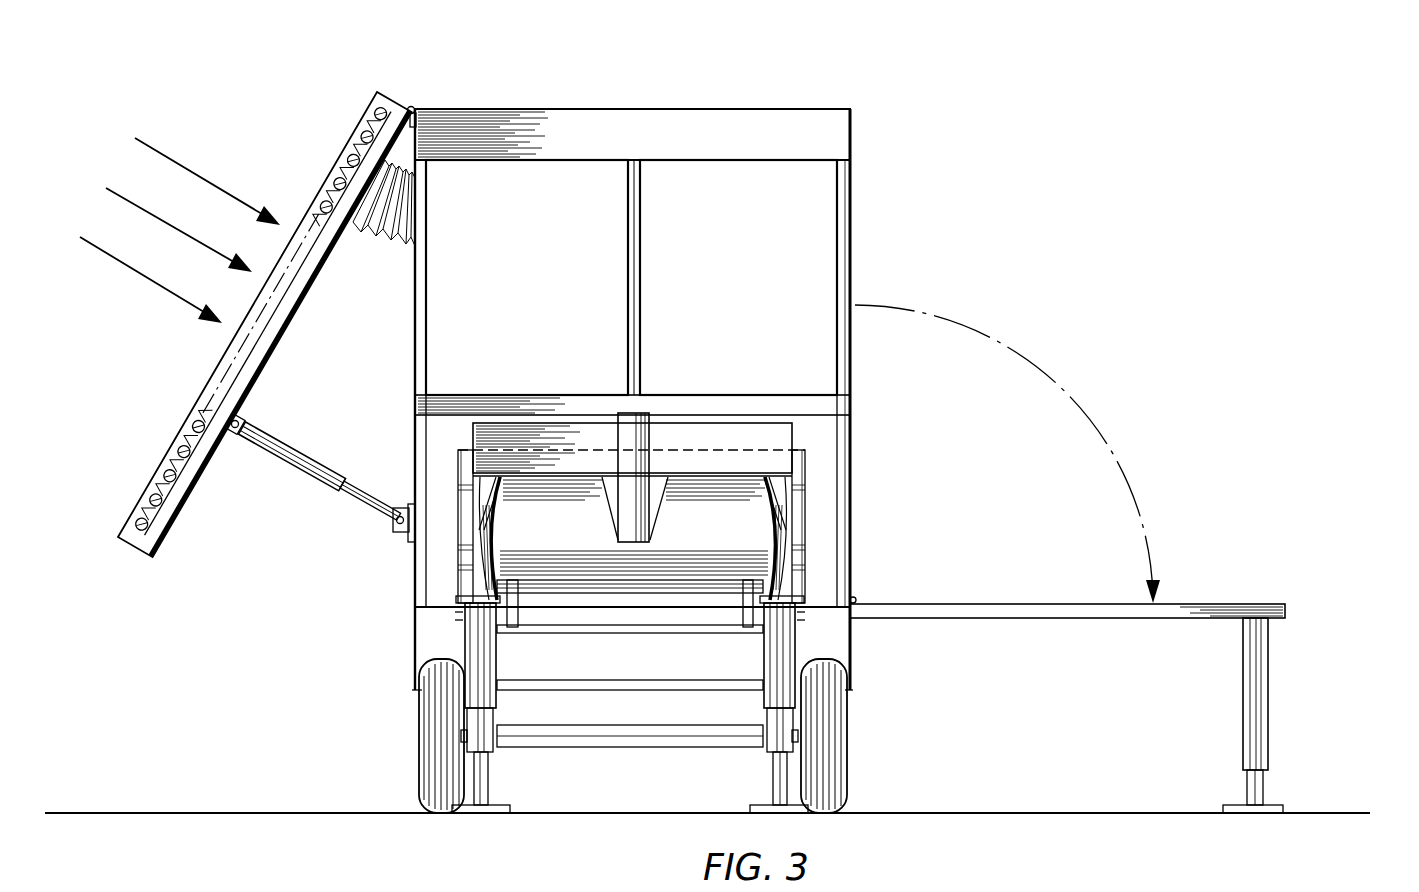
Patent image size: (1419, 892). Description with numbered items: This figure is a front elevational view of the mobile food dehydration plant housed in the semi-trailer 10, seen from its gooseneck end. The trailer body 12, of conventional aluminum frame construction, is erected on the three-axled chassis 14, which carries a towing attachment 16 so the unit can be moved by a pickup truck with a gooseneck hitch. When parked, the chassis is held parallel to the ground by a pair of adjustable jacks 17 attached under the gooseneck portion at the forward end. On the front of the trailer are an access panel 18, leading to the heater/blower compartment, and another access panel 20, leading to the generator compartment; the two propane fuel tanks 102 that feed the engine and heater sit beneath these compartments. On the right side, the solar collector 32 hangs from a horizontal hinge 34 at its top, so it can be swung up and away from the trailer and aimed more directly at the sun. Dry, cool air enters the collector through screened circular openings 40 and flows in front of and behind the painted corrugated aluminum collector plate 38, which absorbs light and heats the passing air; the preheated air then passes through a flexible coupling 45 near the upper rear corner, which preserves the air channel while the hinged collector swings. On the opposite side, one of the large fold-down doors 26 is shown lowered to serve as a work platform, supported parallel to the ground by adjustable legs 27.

The semi-trailer 10 is at (872, 132).
The trailer body 12 is at (730, 118).
The chassis 14 is at (645, 673).
The towing attachment 16 is at (620, 508).
The adjustable jacks 17 is at (497, 668).
The access panel 18 is at (445, 327).
The access panel 20 is at (820, 242).
The fold-down doors 26 is at (1062, 603).
The adjustable legs 27 is at (1262, 708).
The solar collector 32 is at (205, 365).
The horizontal hinge 34 is at (413, 107).
The corrugated aluminum collector plate 38 is at (198, 412).
The screened circular openings 40 is at (180, 452).
The flexible coupling 45 is at (392, 240).
The tanks 102 is at (630, 525).